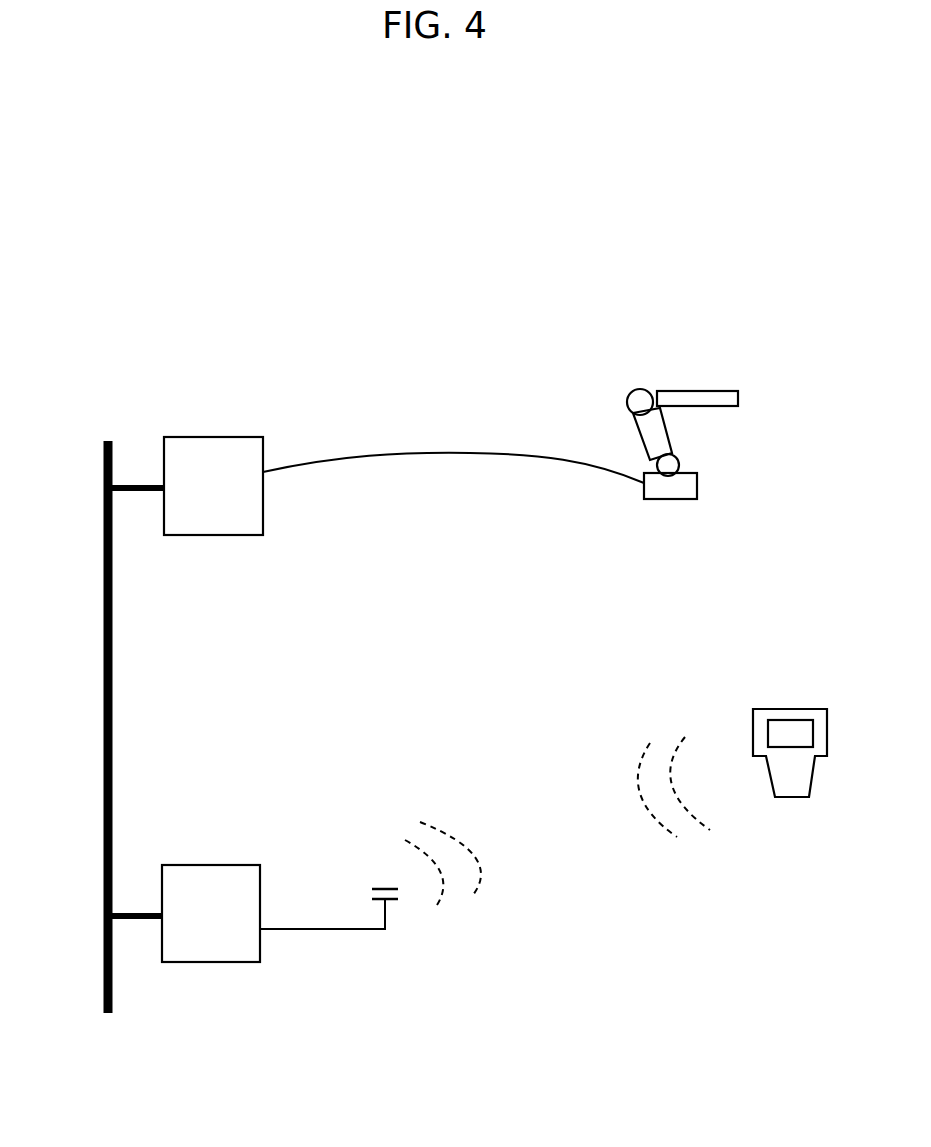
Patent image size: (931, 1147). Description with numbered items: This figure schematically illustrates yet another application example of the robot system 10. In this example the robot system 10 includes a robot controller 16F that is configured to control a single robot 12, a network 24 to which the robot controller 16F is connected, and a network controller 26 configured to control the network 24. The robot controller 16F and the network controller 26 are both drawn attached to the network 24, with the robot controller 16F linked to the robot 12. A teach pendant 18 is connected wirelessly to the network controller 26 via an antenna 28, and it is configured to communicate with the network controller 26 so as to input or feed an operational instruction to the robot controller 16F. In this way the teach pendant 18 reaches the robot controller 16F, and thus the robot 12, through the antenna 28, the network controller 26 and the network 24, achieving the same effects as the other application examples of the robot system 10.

The robot system 10 is at (385, 295).
The robot 12 is at (699, 367).
The robot controller 16F is at (214, 427).
The teach pendant 18 is at (793, 698).
The network 24 is at (104, 725).
The network controller 26 is at (201, 973).
The antenna 28 is at (347, 931).